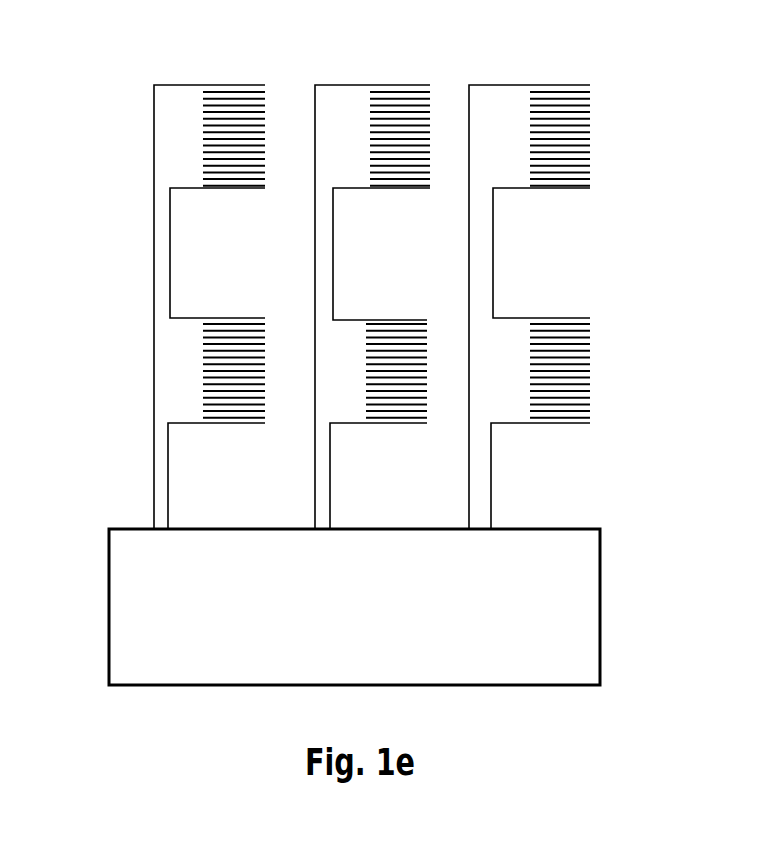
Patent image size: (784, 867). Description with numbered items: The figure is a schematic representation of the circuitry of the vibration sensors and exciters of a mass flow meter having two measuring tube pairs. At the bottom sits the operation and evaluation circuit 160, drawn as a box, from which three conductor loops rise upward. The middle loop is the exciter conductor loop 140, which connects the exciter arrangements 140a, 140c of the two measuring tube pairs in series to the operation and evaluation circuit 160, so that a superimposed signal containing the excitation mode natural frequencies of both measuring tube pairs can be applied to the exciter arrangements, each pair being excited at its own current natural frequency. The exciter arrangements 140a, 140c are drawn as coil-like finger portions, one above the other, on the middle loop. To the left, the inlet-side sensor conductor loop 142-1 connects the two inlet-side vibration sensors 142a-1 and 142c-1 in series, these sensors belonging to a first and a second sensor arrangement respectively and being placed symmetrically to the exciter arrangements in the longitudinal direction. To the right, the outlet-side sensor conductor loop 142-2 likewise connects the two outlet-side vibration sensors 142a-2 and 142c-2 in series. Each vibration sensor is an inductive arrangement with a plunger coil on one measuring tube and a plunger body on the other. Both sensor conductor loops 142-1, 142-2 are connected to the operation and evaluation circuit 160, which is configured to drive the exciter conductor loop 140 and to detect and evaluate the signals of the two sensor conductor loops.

The exciter conductor loop 140 is at (315, 498).
The exciter arrangement 140a is at (430, 108).
The exciter arrangement 140c is at (425, 342).
The inlet-side sensor conductor loop 142-1 is at (155, 275).
The inlet-side vibration sensor 142a-1 is at (267, 90).
The inlet-side vibration sensor 142c-1 is at (266, 322).
The outlet-side sensor conductor loop 142-2 is at (478, 270).
The outlet-side vibration sensor 142a-2 is at (593, 147).
The outlet-side vibration sensor 142c-2 is at (593, 377).
The operation and evaluation circuit 160 is at (602, 626).